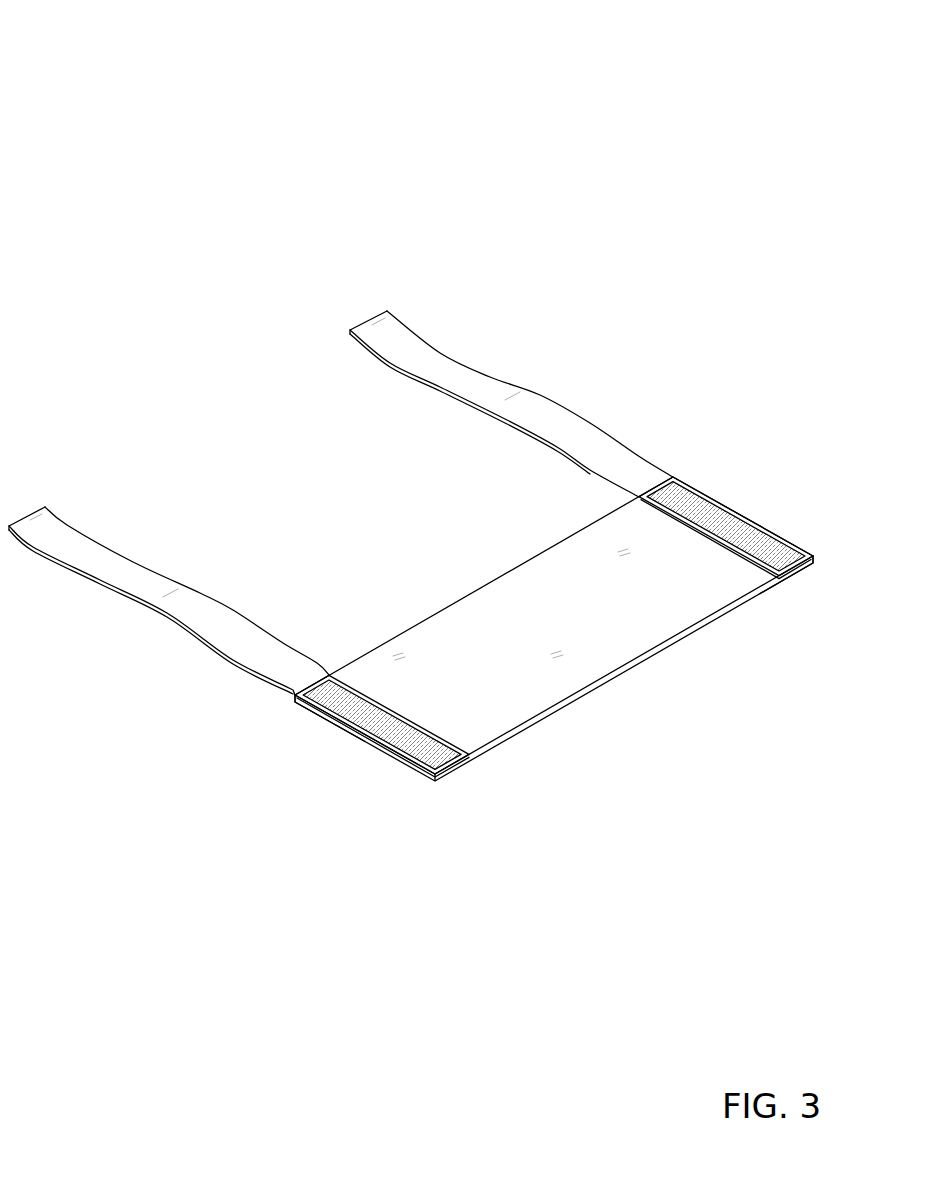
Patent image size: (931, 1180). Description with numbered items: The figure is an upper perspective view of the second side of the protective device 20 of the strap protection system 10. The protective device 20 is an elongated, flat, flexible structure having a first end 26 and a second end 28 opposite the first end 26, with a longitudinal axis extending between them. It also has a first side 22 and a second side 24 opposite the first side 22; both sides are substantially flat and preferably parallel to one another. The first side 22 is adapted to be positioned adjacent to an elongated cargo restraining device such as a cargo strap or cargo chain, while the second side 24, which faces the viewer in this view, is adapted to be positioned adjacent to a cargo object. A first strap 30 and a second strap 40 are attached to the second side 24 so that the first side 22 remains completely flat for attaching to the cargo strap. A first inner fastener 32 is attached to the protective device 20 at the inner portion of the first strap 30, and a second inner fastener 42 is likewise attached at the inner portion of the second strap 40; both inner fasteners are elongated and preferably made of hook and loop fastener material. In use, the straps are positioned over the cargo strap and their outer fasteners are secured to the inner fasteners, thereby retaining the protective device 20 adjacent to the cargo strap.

The strap protection system 10 is at (188, 157).
The protective device 20 is at (478, 574).
The first side 22 is at (565, 708).
The second side 24 is at (453, 636).
The first end 26 is at (358, 737).
The second end 28 is at (823, 561).
The first strap 30 is at (215, 597).
The first inner fastener 32 is at (362, 707).
The second strap 40 is at (528, 387).
The second inner fastener 42 is at (690, 503).